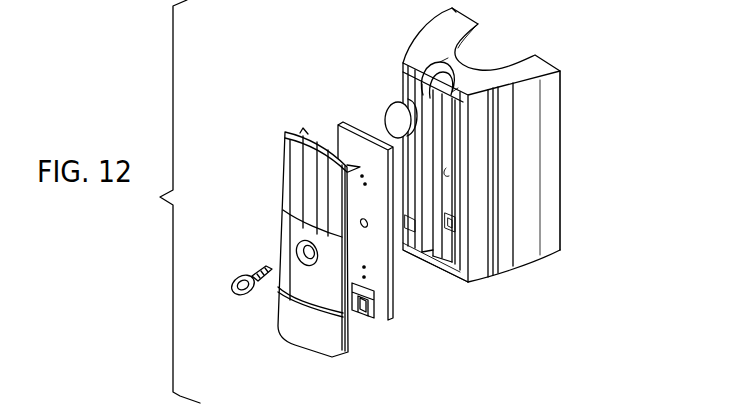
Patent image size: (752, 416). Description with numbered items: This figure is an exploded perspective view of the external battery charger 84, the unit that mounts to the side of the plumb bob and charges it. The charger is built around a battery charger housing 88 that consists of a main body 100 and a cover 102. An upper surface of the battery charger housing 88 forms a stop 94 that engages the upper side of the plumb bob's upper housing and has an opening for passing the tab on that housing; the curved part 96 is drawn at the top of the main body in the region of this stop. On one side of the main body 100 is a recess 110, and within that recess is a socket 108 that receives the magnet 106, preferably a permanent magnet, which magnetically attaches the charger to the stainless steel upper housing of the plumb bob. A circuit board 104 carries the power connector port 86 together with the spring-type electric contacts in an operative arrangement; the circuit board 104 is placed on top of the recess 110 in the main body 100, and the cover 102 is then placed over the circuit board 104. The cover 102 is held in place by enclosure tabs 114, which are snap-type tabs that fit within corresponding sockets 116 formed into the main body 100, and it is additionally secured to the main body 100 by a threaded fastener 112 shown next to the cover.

The external battery charger 84 is at (572, 112).
The power connector port 86 is at (372, 322).
The battery charger housing 88 is at (543, 187).
The stop 94 is at (533, 72).
The curved cap 96 is at (511, 63).
The main body 100 is at (547, 225).
The cover 102 is at (303, 327).
The circuit board 104 is at (383, 268).
The magnet 106 is at (399, 114).
The socket 108 is at (448, 82).
The recess 110 is at (450, 250).
The threaded fastener 112 is at (235, 295).
The enclosure tabs 114 is at (300, 133).
The sockets 116 is at (402, 74).